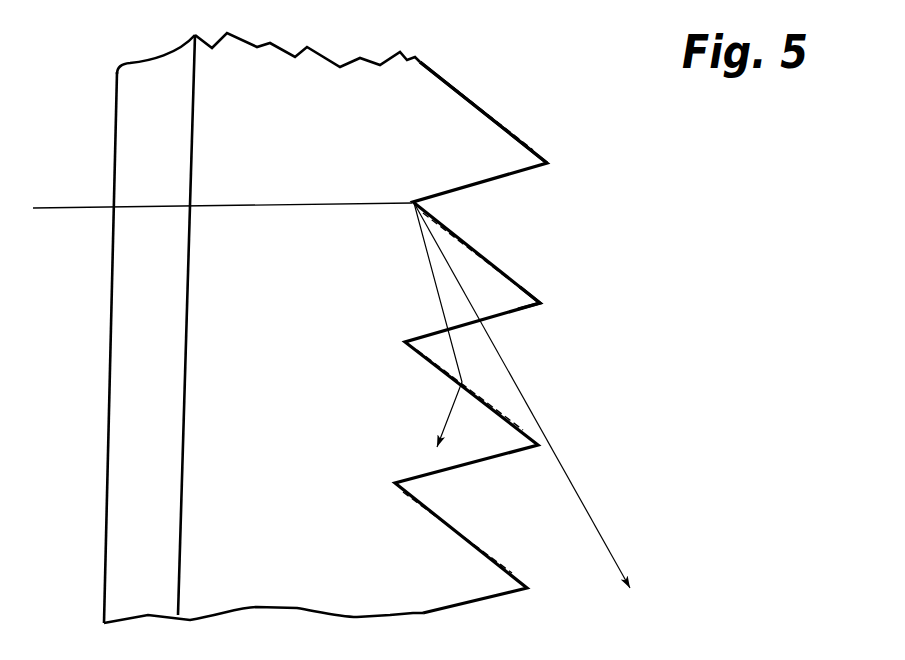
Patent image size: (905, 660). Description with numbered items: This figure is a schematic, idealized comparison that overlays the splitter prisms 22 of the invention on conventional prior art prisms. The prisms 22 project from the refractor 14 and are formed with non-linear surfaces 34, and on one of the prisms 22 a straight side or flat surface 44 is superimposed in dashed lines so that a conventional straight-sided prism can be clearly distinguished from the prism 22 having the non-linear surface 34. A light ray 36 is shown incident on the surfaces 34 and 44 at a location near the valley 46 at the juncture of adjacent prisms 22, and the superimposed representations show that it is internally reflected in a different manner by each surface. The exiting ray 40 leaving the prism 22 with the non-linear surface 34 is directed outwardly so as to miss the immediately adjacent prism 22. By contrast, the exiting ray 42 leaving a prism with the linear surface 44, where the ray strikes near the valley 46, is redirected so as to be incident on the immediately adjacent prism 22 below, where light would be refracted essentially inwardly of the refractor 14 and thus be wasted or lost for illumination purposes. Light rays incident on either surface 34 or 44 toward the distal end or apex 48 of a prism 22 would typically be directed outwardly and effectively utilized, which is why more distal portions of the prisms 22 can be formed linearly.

The refractor 14 is at (256, 286).
The splitter prism 22 is at (580, 234).
The non-linear surface 34 is at (520, 127).
The light ray 36 is at (255, 207).
The exiting ray 40 is at (560, 457).
The exiting ray 42 is at (433, 277).
The straight surface 44 is at (457, 232).
The valley 46 is at (390, 198).
The apex 48 is at (547, 305).